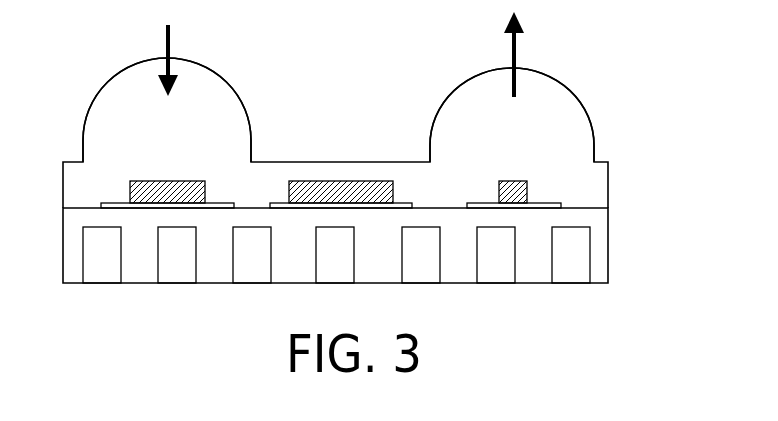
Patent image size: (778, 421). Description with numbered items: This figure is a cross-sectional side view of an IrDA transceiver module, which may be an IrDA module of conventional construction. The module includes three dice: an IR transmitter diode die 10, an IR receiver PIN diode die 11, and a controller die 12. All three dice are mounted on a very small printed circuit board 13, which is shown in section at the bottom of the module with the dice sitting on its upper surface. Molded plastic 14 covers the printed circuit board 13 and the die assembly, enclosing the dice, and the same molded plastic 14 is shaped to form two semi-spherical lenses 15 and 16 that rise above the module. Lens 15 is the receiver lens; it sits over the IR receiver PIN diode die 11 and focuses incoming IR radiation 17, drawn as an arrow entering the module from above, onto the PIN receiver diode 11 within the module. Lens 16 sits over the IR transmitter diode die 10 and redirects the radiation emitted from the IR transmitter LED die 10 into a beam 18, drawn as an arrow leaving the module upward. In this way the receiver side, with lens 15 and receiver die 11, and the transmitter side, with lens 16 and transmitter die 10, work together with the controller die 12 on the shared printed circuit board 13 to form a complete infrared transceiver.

The IR transmitter diode die 10 is at (513, 181).
The IR receiver PIN diode die 11 is at (186, 181).
The controller die 12 is at (337, 181).
The printed circuit board 13 is at (608, 246).
The molded plastic 14 is at (397, 163).
The lens 15 is at (86, 84).
The lens 16 is at (592, 82).
The incoming IR radiation 17 is at (171, 38).
The beam 18 is at (512, 45).